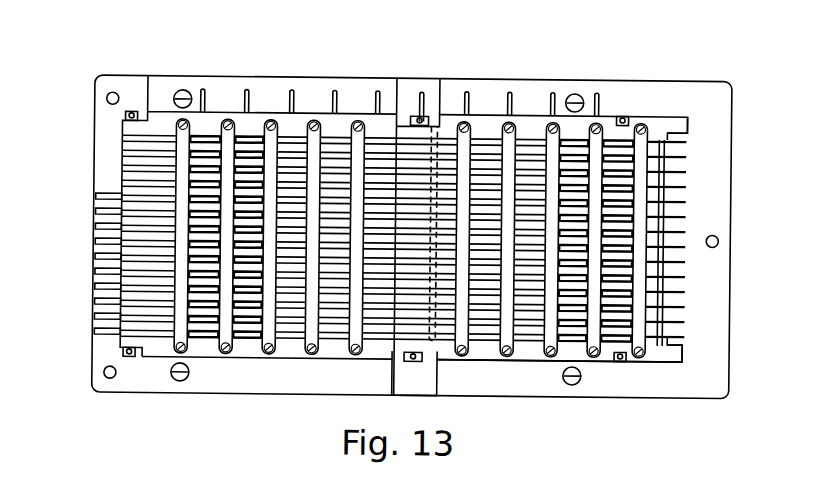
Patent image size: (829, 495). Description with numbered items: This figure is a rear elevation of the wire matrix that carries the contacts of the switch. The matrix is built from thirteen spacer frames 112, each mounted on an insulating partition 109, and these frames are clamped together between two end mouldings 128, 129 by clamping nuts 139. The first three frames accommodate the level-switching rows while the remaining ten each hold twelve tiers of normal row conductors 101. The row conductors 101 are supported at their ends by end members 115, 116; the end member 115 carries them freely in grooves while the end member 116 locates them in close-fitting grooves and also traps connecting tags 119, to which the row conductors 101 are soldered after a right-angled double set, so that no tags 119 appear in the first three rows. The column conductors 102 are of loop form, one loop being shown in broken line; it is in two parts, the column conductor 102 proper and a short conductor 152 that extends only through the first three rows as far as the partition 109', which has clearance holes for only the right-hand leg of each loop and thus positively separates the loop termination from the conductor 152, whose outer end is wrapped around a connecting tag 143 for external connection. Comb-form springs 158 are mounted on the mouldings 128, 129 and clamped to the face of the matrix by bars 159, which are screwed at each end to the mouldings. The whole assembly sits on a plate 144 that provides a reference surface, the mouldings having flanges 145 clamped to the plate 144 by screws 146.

The row conductors 101 is at (108, 193).
The column conductors 102 is at (443, 130).
The insulating partition 109 is at (689, 240).
The partition 109' is at (399, 186).
The spacer frames 112 is at (676, 311).
The end member 115 is at (683, 218).
The end member 116 is at (130, 145).
The connecting tags 119 is at (103, 225).
The moulding 128 is at (680, 349).
The moulding 129 is at (677, 121).
The clamping nuts 139 is at (131, 358).
The connecting tag 143 is at (250, 92).
The plate 144 is at (677, 392).
The flanges 145 is at (496, 392).
The screws 146 is at (182, 382).
The short conductor 152 is at (427, 112).
The springs 158 is at (207, 143).
The bars 159 is at (511, 140).